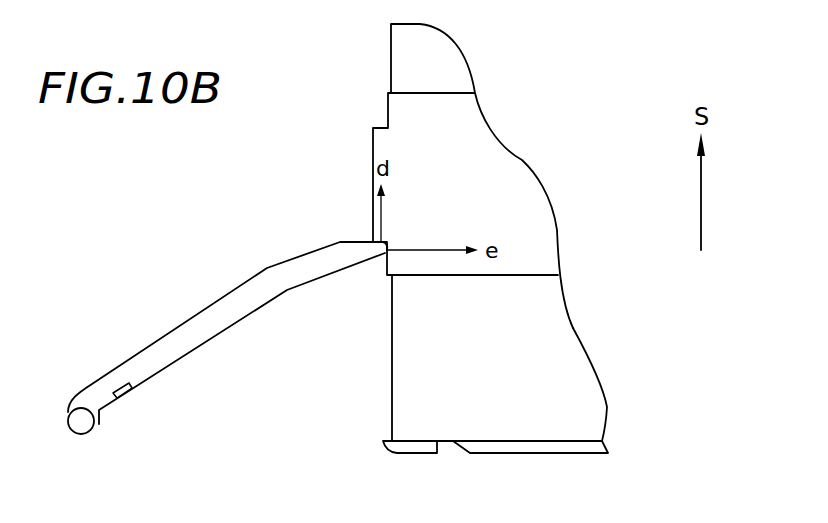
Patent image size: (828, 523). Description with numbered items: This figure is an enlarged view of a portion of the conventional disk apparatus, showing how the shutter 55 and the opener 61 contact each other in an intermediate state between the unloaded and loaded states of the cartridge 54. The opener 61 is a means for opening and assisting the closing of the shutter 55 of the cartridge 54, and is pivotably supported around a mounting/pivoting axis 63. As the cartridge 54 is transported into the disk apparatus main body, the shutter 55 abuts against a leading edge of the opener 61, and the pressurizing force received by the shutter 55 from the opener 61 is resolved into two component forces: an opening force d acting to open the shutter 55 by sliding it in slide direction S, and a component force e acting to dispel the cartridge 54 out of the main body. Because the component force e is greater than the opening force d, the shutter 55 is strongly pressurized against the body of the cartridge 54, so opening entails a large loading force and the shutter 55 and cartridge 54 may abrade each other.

The shutter 55 is at (505, 195).
The cartridge 54 is at (577, 393).
The opener 61 is at (215, 317).
The mounting/pivoting axis 63 is at (83, 423).